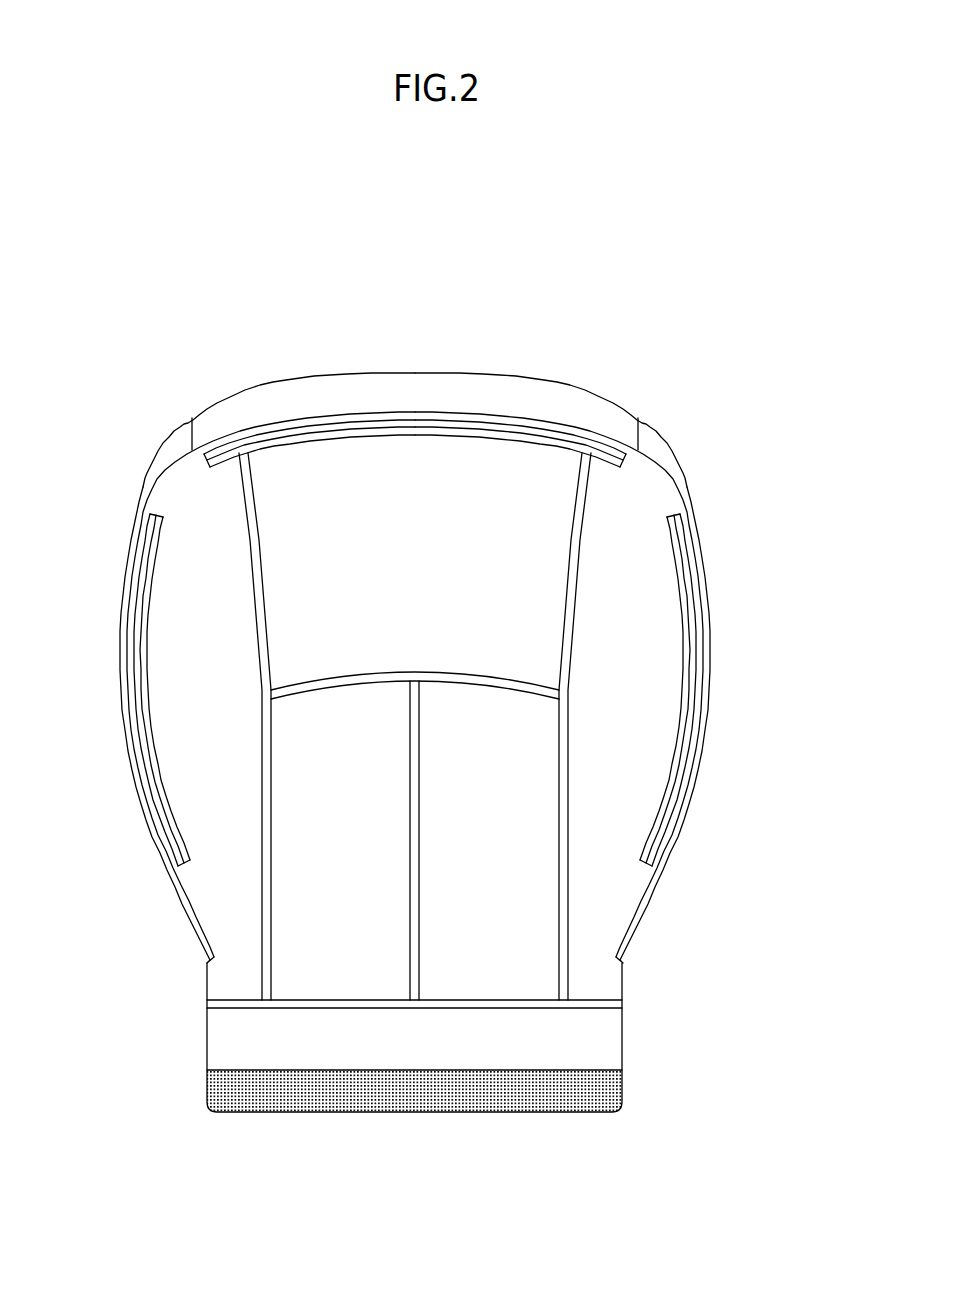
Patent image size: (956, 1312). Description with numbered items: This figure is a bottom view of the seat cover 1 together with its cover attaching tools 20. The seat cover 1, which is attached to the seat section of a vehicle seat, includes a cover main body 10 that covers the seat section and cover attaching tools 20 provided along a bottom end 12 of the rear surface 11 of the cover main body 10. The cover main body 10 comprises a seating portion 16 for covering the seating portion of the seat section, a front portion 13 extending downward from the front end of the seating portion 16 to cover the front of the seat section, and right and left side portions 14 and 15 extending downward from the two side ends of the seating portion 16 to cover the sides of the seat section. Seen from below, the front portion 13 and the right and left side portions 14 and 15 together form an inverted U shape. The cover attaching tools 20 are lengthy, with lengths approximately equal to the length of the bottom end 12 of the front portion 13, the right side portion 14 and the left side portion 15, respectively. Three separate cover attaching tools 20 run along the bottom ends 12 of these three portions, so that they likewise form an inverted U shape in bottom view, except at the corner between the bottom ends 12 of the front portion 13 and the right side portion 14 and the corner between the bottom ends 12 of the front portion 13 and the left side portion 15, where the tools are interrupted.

The seat cover 1 is at (683, 365).
The cover main body 10 is at (196, 943).
The rear surface 11 is at (222, 580).
The bottom end 12 is at (163, 470).
The front portion 13 is at (347, 390).
The right side portion 14 is at (121, 636).
The left side portion 15 is at (711, 633).
The seating portion 16 is at (600, 883).
The cover attaching tools 20 is at (421, 423).